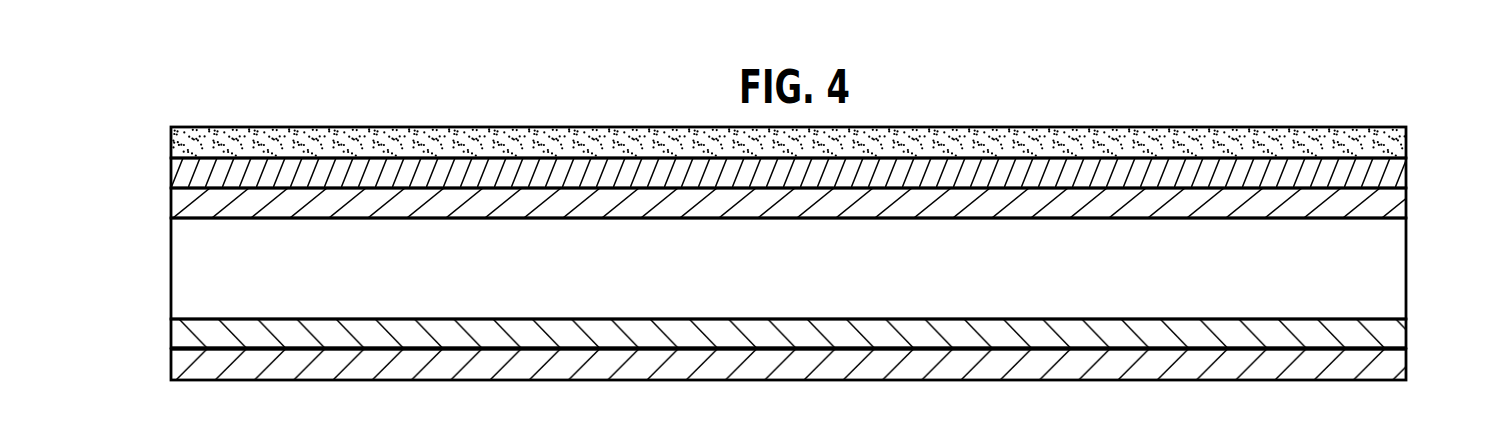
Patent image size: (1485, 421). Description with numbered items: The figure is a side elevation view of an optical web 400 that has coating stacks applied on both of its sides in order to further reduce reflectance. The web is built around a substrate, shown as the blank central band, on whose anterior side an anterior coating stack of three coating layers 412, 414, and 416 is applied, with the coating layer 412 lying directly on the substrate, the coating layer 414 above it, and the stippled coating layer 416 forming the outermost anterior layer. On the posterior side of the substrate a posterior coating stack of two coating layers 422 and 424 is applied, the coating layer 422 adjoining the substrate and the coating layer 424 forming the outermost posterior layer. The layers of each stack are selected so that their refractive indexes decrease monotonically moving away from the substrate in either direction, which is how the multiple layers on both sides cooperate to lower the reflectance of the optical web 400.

The optical web 400 is at (205, 107).
The coating layer 416 is at (171, 154).
The coating layer 414 is at (171, 185).
The coating layer 412 is at (171, 217).
The coating layer 422 is at (171, 334).
The coating layer 424 is at (171, 378).